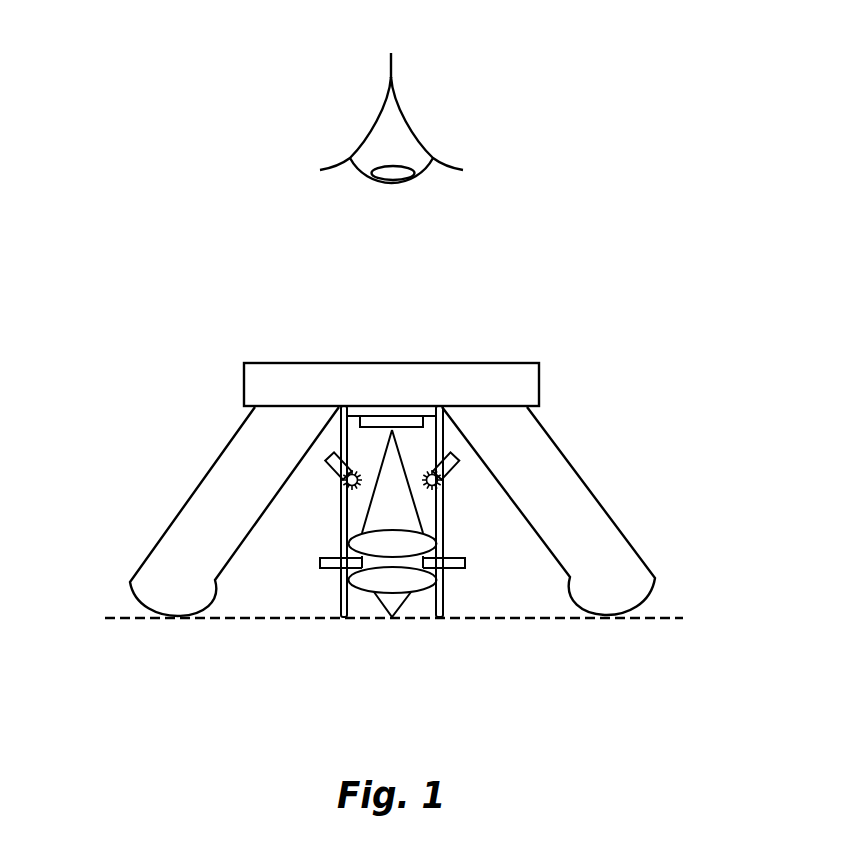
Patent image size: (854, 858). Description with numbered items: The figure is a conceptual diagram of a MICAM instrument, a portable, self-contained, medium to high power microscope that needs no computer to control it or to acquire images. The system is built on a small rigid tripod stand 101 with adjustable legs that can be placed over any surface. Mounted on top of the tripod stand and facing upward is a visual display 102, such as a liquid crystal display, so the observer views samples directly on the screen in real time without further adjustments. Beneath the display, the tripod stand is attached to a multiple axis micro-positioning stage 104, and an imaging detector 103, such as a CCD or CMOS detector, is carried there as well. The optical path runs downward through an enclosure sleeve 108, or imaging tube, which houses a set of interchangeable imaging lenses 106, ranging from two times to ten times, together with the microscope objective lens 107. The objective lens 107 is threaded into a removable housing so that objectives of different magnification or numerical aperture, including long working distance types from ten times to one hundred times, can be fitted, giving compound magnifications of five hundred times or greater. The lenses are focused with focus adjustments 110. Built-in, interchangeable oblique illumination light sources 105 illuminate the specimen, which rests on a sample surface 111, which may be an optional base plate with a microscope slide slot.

The tripod stand 101 is at (168, 577).
The visual display 102 is at (463, 362).
The imaging detector 103 is at (360, 421).
The positioning stage 104 is at (430, 412).
The oblique illumination light sources 105 is at (328, 459).
The imaging lenses 106 is at (430, 548).
The microscope objective lens 107 is at (428, 585).
The enclosure sleeve 108 is at (437, 547).
The focus adjustments 110 is at (465, 565).
The sample surface 111 is at (477, 620).